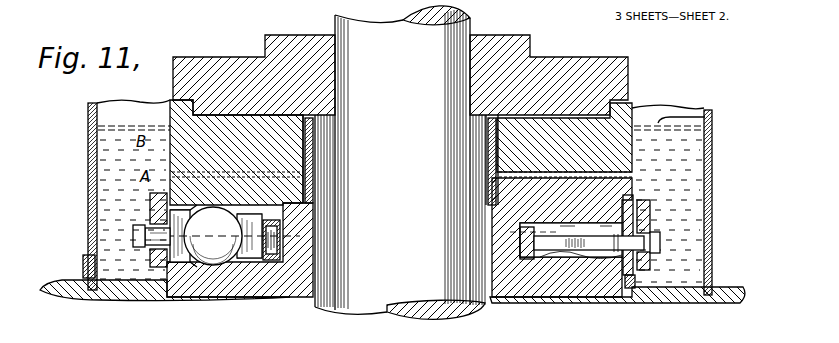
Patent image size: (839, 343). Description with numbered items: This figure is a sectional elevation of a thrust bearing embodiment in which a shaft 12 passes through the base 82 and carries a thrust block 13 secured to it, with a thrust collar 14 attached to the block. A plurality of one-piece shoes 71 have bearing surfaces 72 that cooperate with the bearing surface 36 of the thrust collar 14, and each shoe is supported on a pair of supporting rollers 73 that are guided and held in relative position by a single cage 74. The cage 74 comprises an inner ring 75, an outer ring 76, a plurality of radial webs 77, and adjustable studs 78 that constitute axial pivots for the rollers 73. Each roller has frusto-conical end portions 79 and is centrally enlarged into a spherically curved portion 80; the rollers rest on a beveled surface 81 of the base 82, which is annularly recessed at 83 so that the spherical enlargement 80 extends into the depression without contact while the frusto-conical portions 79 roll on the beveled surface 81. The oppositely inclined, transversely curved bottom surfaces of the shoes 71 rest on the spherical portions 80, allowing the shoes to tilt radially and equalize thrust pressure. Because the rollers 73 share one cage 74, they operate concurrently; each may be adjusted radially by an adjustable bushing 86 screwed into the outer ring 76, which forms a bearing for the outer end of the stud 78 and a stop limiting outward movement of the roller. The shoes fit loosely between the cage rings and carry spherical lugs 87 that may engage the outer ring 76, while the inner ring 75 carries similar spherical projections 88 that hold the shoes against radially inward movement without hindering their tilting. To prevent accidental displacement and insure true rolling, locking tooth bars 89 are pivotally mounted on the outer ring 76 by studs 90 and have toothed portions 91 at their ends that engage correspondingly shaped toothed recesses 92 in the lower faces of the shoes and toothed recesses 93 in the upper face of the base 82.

The shaft 12 is at (452, 47).
The thrust block 13 is at (313, 75).
The thrust collar 14 is at (308, 140).
The bearing surface of the thrust collar 36 is at (578, 172).
The one-piece shoe 71 is at (708, 118).
The bearing surface 72 is at (645, 185).
The supporting roller 73 is at (123, 293).
The cage 74 is at (655, 229).
The inner ring 75 is at (320, 237).
The outer ring 76 is at (150, 210).
The radial web 77 is at (556, 246).
The adjustable stud 78 is at (133, 238).
The frusto-conical end portion 79 is at (185, 257).
The spherically curved portion 80 is at (222, 264).
The beveled surface 81 is at (168, 270).
The base 82 is at (300, 287).
The annular recess 83 is at (208, 266).
The adjustable bushing 86 is at (83, 256).
The spherical lug 87 is at (168, 186).
The spherical projection 88 is at (285, 208).
The locking tooth bar 89 is at (622, 266).
The stud 90 is at (606, 256).
The toothed portion 91 is at (586, 226).
The toothed recess 92 is at (630, 190).
The toothed recess 93 is at (628, 288).